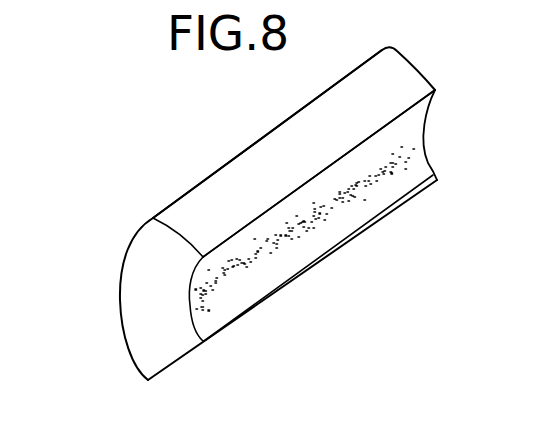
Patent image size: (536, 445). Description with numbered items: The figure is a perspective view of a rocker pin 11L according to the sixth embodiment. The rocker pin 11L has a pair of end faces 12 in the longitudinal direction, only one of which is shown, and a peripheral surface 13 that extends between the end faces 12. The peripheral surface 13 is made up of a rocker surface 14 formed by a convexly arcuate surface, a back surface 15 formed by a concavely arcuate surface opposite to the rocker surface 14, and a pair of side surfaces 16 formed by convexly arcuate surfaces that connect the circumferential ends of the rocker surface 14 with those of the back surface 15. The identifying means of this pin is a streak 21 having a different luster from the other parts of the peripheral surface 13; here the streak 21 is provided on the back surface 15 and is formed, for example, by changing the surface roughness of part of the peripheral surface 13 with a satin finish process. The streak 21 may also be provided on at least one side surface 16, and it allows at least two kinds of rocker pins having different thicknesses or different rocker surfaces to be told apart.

The rocker pin 11L is at (268, 219).
The end face 12 is at (163, 352).
The peripheral surface 13 is at (392, 78).
The rocker surface 14 is at (123, 337).
The back surface 15 is at (361, 203).
The side surface 16 is at (232, 175).
The streak 21 is at (407, 155).